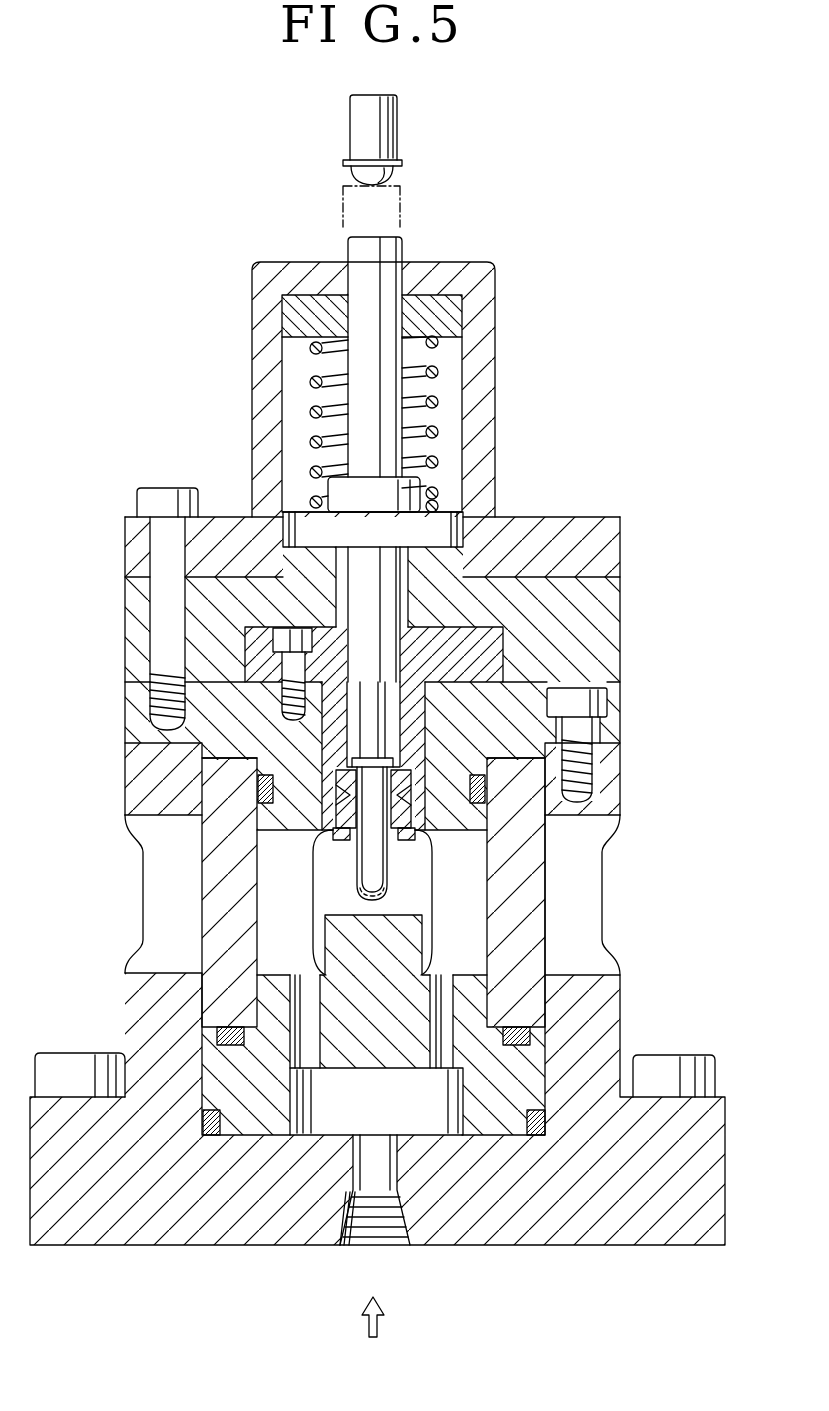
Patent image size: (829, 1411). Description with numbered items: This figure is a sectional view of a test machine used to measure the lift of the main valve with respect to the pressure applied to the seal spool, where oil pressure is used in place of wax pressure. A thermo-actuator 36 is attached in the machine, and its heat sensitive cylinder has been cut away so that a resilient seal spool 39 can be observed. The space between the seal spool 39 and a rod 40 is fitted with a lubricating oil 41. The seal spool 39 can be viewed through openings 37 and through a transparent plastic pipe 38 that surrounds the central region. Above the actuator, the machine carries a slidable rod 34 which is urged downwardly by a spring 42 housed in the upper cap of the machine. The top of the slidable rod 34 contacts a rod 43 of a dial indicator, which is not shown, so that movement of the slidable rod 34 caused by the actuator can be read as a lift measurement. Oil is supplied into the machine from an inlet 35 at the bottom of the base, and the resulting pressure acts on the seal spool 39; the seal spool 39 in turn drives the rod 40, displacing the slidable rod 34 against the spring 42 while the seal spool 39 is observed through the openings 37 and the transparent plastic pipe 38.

The slidable rod 34 is at (403, 250).
The inlet 35 is at (365, 1246).
The thermo-actuator 36 is at (330, 840).
The openings 37 is at (152, 860).
The transparent plastic pipe 38 is at (212, 928).
The resilient seal spool 39 is at (390, 847).
The rod 40 is at (367, 852).
The lubricating oil 41 is at (386, 896).
The spring 42 is at (440, 397).
The rod of a dial indicator 43 is at (363, 132).